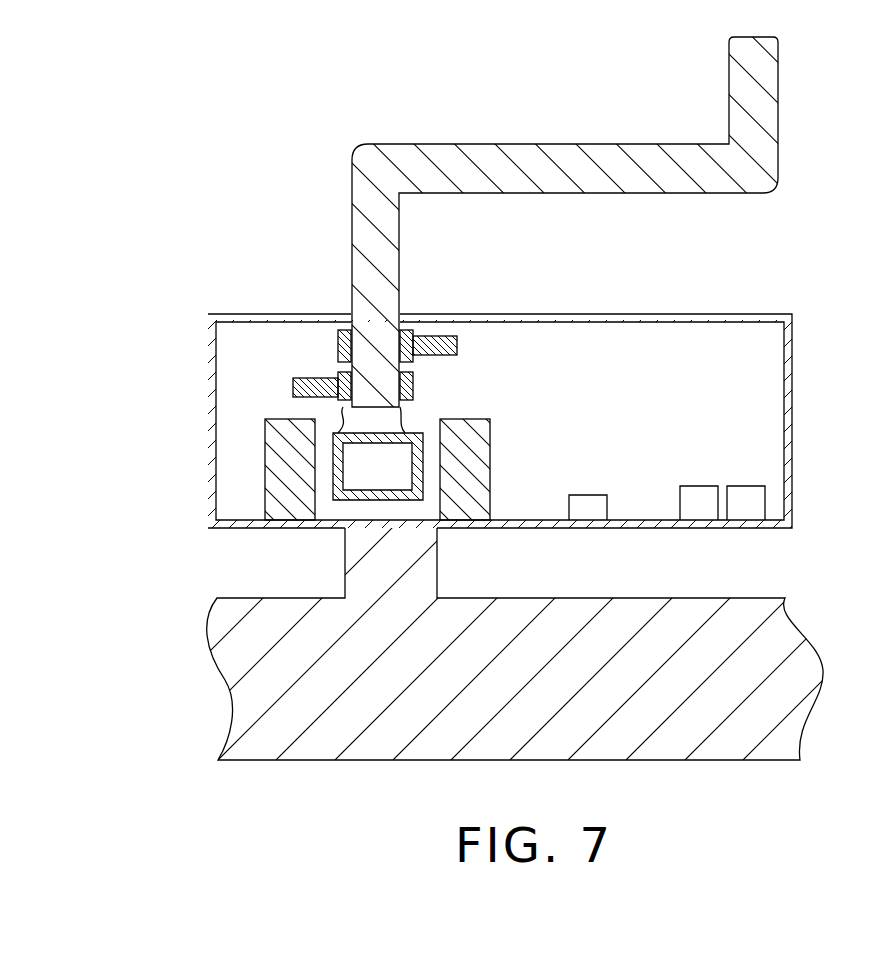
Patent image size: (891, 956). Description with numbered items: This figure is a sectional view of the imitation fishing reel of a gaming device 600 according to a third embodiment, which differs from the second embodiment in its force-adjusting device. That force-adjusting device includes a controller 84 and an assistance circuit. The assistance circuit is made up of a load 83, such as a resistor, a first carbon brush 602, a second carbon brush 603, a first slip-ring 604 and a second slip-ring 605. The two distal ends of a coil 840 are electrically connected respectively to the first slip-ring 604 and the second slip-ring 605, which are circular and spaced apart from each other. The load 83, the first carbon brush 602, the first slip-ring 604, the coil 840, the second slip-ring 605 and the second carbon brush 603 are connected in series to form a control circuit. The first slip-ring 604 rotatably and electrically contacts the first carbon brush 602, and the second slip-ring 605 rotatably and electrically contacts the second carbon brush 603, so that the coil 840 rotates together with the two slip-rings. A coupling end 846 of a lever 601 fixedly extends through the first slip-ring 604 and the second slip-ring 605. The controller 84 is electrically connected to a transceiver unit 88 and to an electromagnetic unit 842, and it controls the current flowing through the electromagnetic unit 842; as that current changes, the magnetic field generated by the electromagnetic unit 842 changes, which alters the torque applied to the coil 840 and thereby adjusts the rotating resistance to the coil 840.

The gaming device 600 is at (180, 64).
The lever 601 is at (660, 180).
The first carbon brush 602 is at (297, 378).
The second carbon brush 603 is at (457, 345).
The first slip-ring 604 is at (338, 370).
The second slip-ring 605 is at (343, 337).
The coil 840 is at (333, 433).
The electromagnetic unit 842 is at (508, 450).
The coupling end 846 is at (370, 378).
The load 83 is at (592, 507).
The controller 84 is at (705, 508).
The transceiver unit 88 is at (753, 487).